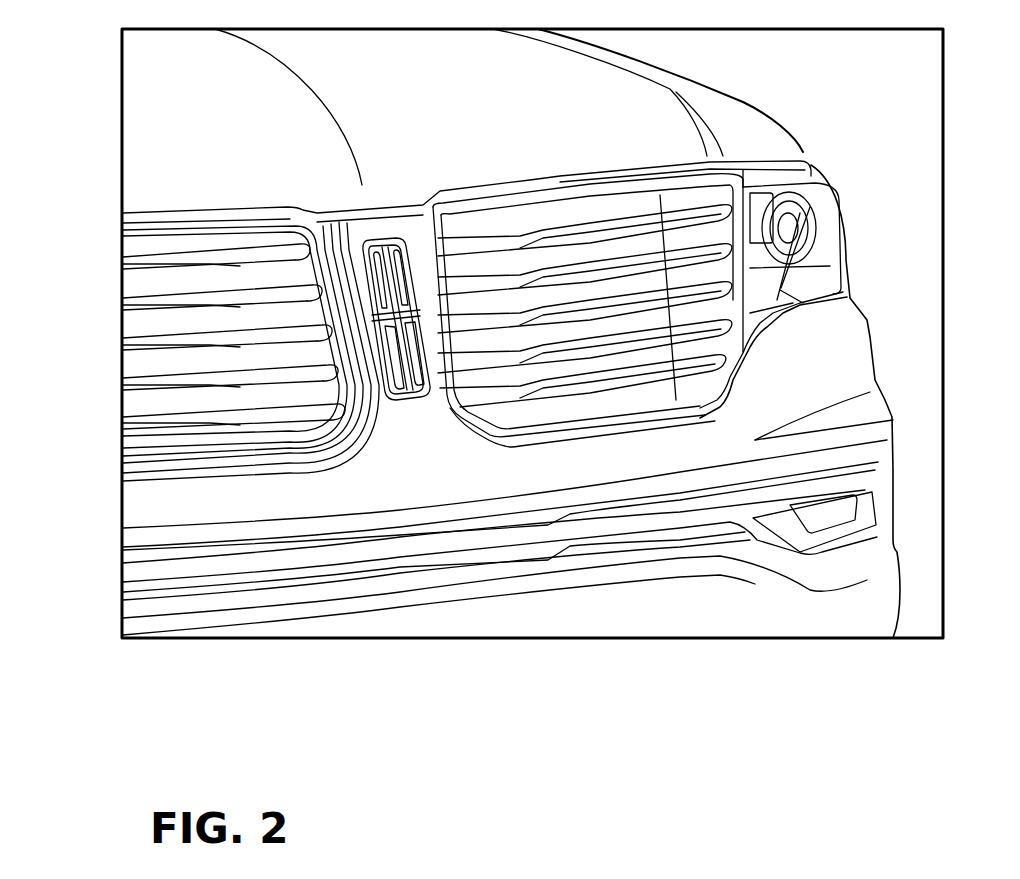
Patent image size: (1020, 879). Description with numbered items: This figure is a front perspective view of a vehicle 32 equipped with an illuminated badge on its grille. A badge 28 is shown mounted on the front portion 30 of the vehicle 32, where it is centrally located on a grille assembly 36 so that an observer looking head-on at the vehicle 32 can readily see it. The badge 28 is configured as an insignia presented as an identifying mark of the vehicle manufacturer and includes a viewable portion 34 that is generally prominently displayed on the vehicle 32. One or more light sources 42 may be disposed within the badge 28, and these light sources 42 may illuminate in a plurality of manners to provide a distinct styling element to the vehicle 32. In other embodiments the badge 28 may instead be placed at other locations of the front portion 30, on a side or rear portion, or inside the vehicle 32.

The badge 28 is at (372, 288).
The front portion 30 is at (407, 452).
The vehicle 32 is at (100, 84).
The viewable portion 34 is at (384, 342).
The grille assembly 36 is at (220, 258).
The light sources 42 is at (404, 366).